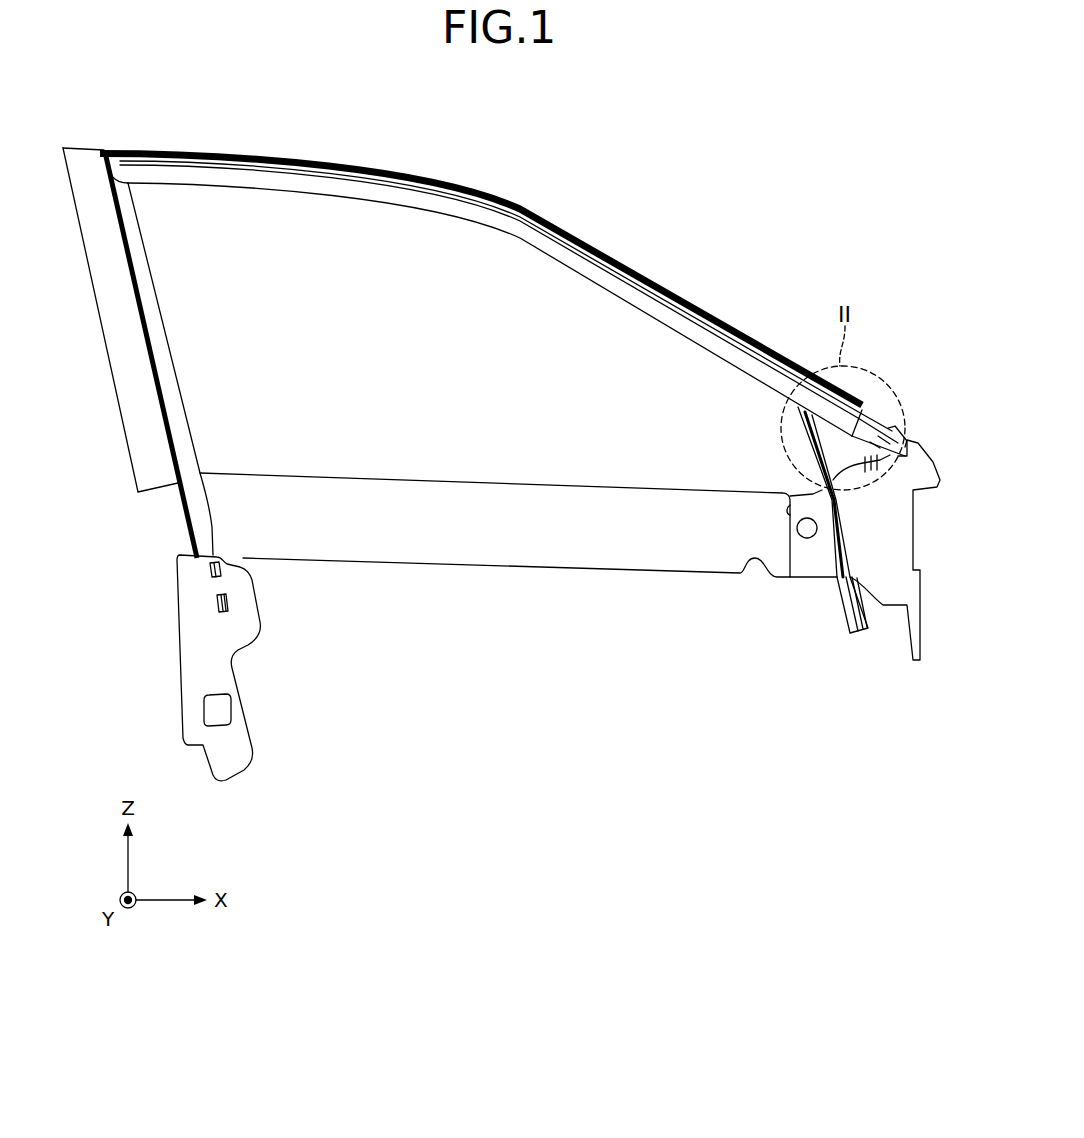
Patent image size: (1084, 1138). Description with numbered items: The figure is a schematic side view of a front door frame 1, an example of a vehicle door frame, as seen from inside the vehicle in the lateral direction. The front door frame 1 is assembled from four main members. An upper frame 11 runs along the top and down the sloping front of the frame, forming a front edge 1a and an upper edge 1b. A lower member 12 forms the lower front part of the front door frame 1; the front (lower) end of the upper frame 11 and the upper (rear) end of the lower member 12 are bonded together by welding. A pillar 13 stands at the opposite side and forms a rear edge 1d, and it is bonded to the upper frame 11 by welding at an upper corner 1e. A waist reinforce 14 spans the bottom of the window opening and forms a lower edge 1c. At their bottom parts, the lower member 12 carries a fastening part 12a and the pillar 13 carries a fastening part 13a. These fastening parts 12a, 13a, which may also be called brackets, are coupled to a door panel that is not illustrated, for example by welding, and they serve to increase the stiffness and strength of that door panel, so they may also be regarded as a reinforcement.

The front door frame 1 is at (790, 178).
The front edge 1a is at (672, 291).
The upper edge 1b is at (270, 149).
The lower edge 1c is at (420, 562).
The rear edge 1d is at (93, 297).
The upper corner 1e is at (59, 137).
The upper frame 11 is at (478, 182).
The lower member 12 is at (930, 638).
The fastening part 12a is at (897, 557).
The pillar 13 is at (98, 362).
The fastening part 13a is at (187, 648).
The waist reinforce 14 is at (543, 580).